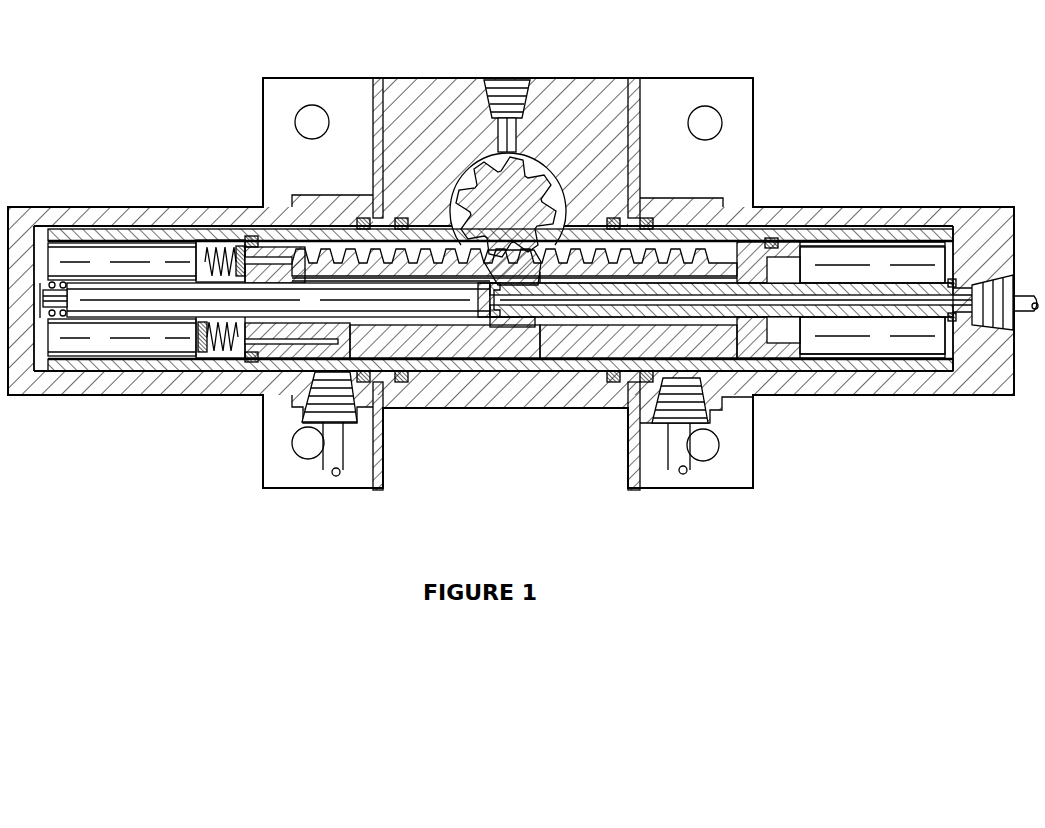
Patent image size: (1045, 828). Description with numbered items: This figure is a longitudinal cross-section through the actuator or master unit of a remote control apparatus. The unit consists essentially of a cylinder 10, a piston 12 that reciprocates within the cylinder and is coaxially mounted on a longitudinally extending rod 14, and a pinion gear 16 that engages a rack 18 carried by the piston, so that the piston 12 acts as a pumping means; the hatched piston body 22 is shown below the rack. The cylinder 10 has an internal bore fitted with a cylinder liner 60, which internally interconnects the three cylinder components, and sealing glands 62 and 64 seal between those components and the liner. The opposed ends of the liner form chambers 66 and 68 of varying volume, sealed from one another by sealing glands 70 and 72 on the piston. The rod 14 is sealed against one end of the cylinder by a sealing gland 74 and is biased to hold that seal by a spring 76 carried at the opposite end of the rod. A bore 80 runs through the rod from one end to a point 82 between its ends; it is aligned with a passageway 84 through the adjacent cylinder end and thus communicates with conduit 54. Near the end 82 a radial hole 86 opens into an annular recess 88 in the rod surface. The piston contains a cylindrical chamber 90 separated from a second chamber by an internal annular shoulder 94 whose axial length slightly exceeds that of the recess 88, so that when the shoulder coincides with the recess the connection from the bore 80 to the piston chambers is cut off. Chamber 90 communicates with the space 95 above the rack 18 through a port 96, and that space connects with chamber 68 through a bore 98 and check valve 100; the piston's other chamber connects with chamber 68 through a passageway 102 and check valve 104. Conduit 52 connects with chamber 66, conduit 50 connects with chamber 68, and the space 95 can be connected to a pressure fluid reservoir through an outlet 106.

The cylinder 10 is at (525, 279).
The piston 12 is at (760, 385).
The rod 14 is at (905, 318).
The pinion gear 16 is at (518, 190).
The rack 18 is at (730, 250).
The piston rack body 22 is at (393, 323).
The conduit 50 is at (335, 478).
The conduit 52 is at (688, 470).
The conduit 54 is at (1020, 310).
The cylinder liner 60 is at (901, 230).
The sealing gland 62 is at (648, 218).
The sealing gland 64 is at (614, 218).
The chamber 66 is at (922, 264).
The chamber 68 is at (108, 262).
The sealing gland 70 is at (775, 242).
The sealing gland 72 is at (253, 236).
The sealing gland 74 is at (953, 322).
The spring 76 is at (50, 283).
The bore 80 is at (831, 300).
The end of bore 82 is at (478, 302).
The passageway 84 is at (975, 298).
The radial hole 86 is at (460, 292).
The annular recess 88 is at (505, 327).
The cylindrical chamber 90 is at (600, 320).
The internal annular shoulder 94 is at (518, 330).
The space above rack 95 is at (578, 255).
The port 96 is at (706, 258).
The bore 98 is at (262, 258).
The check valve 100 is at (215, 250).
The passageway 102 is at (268, 345).
The check valve 104 is at (212, 357).
The outlet 106 is at (518, 80).